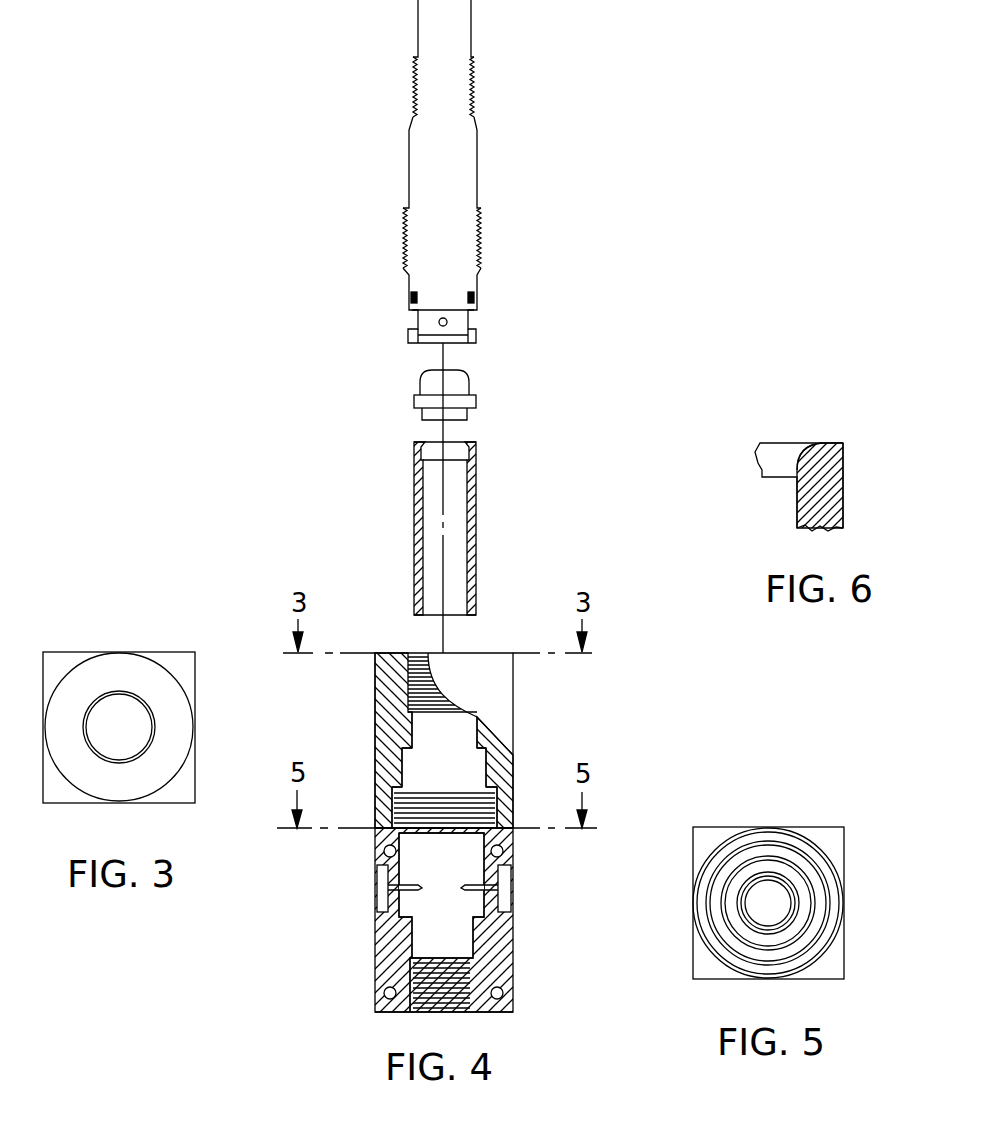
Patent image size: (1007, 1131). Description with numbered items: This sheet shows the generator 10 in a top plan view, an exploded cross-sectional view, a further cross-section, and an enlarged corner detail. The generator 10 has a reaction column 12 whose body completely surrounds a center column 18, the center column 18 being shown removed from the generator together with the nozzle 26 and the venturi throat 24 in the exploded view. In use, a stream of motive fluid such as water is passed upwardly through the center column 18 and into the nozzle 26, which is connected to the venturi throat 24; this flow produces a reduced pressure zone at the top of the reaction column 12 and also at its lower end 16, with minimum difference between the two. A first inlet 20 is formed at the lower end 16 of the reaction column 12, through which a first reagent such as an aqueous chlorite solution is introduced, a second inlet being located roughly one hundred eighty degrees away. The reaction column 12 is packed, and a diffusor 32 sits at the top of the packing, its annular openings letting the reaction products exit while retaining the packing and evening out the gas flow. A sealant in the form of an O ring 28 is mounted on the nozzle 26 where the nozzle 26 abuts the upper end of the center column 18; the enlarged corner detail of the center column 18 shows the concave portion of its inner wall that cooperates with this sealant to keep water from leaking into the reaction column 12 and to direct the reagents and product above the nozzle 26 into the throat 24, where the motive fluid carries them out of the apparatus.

In FIG. 4, the generator 10 is at (425, 846).
In FIG. 3, the reaction column 12 is at (116, 662).
In FIG. 4, the reaction column 12 is at (510, 753).
In FIG. 5, the reaction column 12 is at (832, 922).
In FIG. 4, the lower end 16 is at (375, 937).
In FIG. 5, the lower end 16 is at (769, 870).
In FIG. 4, the center column 18 is at (414, 487).
In FIG. 6, the center column 18 is at (797, 500).
In FIG. 4, the first inlet 20 is at (386, 887).
In FIG. 4, the venturi throat 24 is at (477, 160).
In FIG. 4, the nozzle 26 is at (469, 385).
In FIG. 4, the O ring 28 is at (467, 412).
In FIG. 4, the diffusor 32 is at (499, 885).